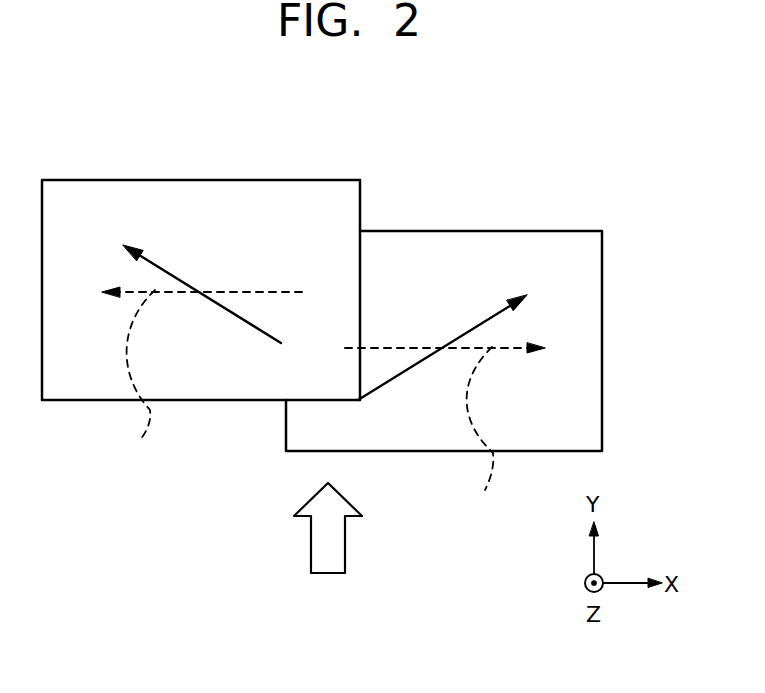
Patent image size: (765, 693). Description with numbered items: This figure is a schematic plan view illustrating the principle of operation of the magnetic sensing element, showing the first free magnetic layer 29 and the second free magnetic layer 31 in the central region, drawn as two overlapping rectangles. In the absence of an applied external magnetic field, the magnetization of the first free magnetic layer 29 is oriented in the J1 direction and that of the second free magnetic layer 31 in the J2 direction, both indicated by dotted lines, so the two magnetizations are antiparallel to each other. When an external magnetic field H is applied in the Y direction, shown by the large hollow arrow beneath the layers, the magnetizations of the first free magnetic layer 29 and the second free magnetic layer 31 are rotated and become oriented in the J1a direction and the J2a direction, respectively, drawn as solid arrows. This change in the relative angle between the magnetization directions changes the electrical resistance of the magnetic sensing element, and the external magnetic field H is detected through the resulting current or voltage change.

The first free magnetic layer 29 is at (558, 257).
The second free magnetic layer 31 is at (287, 195).
The J1a direction J1a is at (488, 322).
The J2a direction J2a is at (167, 270).
The J1 direction J1 is at (478, 435).
The J2 direction J2 is at (138, 379).
The external magnetic field H is at (334, 528).